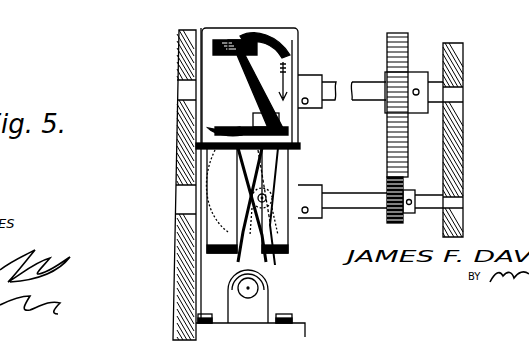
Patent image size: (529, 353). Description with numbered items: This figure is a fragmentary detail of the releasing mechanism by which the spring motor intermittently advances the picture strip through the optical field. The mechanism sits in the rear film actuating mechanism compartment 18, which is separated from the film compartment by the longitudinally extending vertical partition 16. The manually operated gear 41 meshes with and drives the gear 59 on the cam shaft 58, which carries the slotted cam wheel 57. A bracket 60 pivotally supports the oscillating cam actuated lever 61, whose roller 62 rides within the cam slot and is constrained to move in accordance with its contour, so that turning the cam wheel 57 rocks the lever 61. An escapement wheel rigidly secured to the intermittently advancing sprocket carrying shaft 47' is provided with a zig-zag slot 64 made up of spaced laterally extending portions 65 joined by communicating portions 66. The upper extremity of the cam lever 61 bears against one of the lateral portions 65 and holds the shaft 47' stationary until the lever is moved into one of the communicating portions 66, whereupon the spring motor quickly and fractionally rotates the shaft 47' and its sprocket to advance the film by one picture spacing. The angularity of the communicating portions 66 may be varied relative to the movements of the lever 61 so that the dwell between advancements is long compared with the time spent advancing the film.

The vertical partition 16 is at (464, 150).
The rear film actuating mechanism compartment 18 is at (178, 161).
The manually operated gear 41 is at (387, 165).
The shaft 47' is at (354, 73).
The slotted cam wheel 57 is at (274, 258).
The cam shaft 58 is at (333, 209).
The gear 59 is at (392, 222).
The bracket 60 is at (250, 309).
The oscillating cam actuated lever 61 is at (244, 272).
The roller 62 is at (268, 222).
The zig-zag slot 64 is at (248, 98).
The laterally extending portions 65 is at (226, 42).
The communicating portions 66 is at (272, 46).